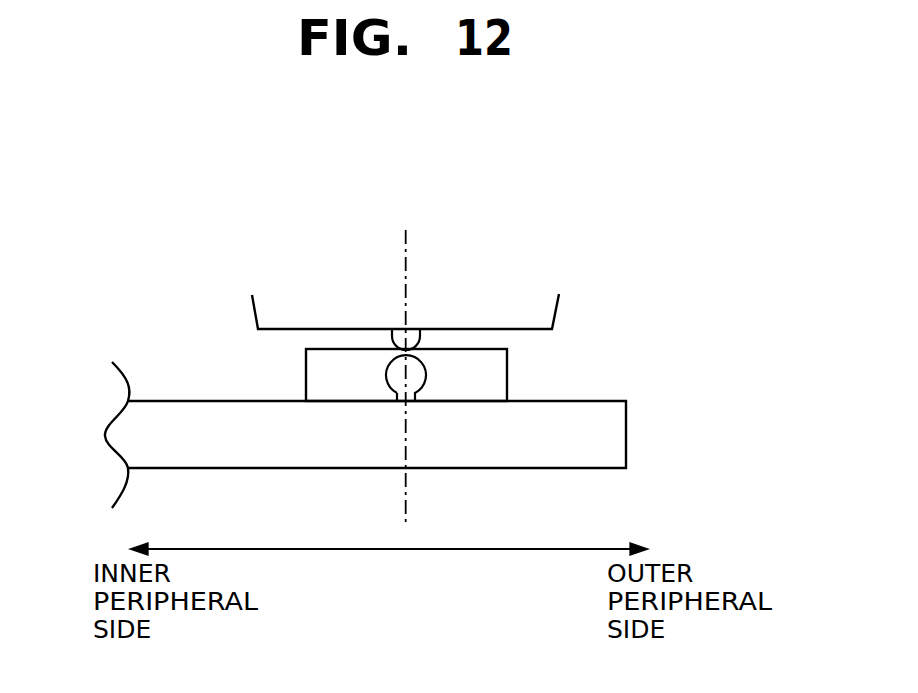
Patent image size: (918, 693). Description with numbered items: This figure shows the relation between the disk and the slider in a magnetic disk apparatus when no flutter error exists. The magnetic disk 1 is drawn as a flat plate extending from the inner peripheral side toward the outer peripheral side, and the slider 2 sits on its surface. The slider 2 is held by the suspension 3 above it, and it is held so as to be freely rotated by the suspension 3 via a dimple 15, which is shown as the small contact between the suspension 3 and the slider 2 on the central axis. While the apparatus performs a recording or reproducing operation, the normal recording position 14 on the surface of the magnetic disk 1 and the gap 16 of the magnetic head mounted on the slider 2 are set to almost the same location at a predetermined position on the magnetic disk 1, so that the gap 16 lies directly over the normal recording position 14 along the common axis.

The magnetic disk 1 is at (605, 429).
The slider 2 is at (327, 374).
The suspension 3 is at (555, 320).
The normal recording position 14 is at (406, 415).
The dimple 15 is at (411, 335).
The gap 16 is at (403, 388).